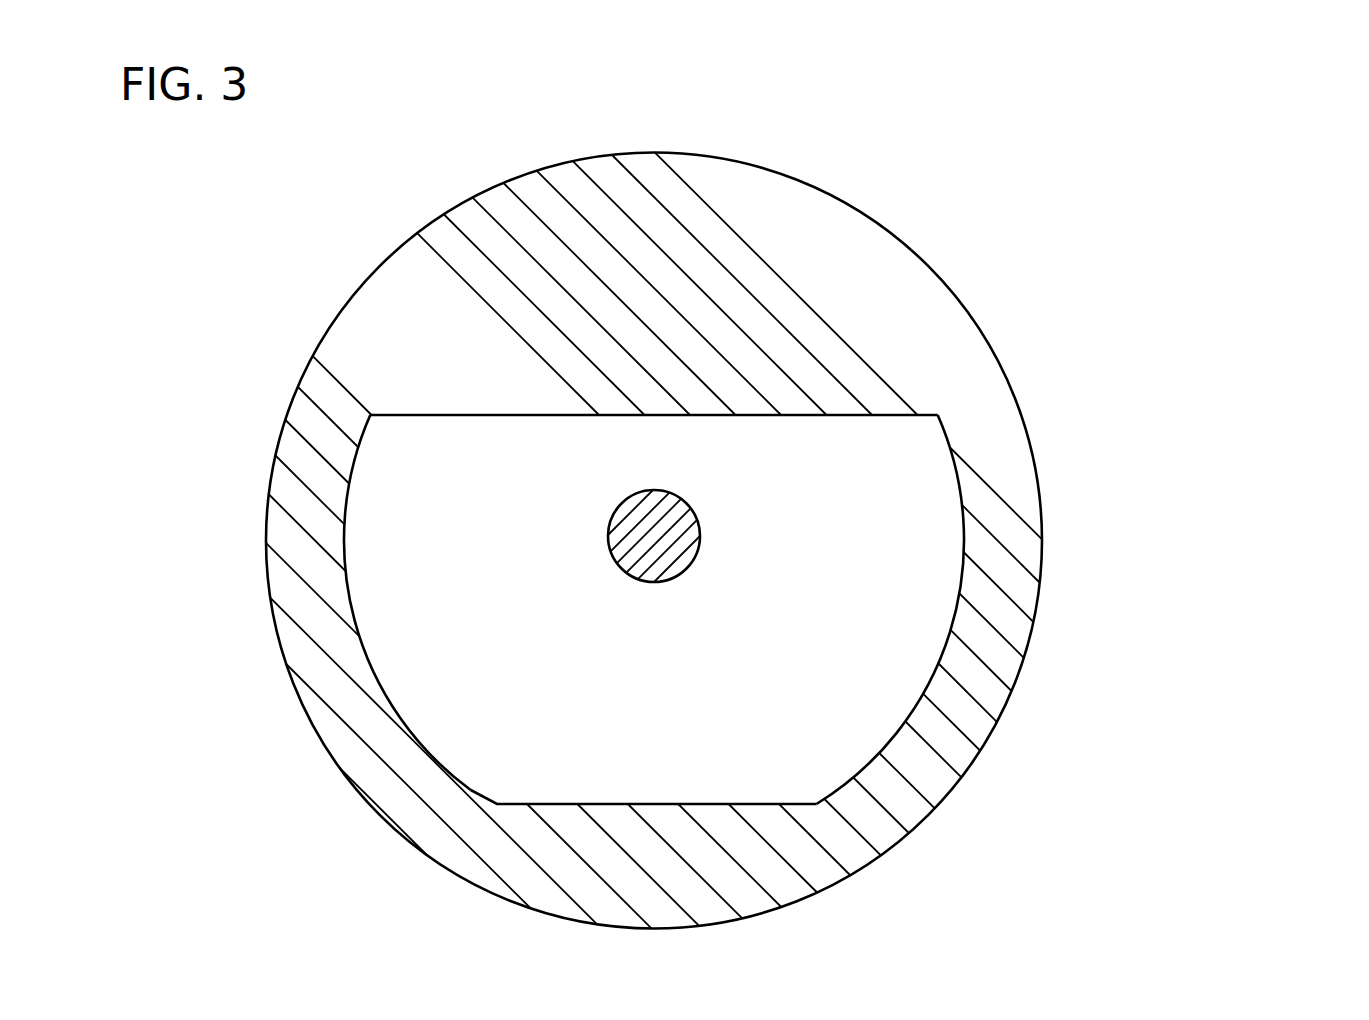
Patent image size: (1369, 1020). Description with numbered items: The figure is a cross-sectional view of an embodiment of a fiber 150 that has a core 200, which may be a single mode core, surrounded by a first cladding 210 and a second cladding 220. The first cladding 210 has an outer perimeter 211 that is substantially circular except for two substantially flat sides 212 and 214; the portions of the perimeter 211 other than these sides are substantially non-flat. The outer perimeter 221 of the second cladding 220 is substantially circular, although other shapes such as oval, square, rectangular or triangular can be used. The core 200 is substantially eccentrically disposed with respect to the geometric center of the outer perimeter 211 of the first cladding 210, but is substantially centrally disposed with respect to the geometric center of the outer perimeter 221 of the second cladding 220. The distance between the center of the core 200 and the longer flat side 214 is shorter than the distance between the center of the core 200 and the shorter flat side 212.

The fiber 150 is at (1232, 318).
The core 200 is at (683, 532).
The first cladding 210 is at (848, 715).
The outer perimeter 211 is at (373, 670).
The flat side 212 is at (563, 789).
The flat side 214 is at (423, 417).
The second cladding 220 is at (973, 370).
The outer perimeter 221 is at (417, 233).